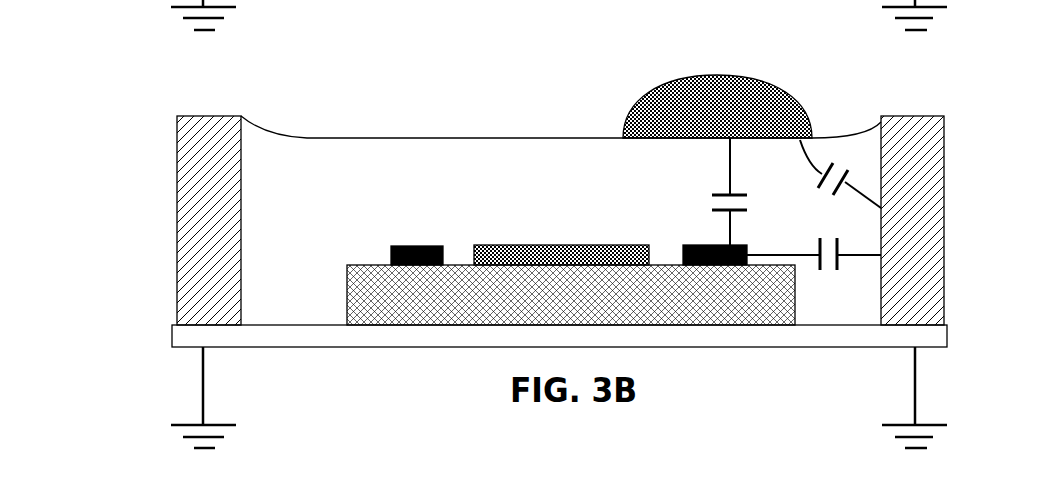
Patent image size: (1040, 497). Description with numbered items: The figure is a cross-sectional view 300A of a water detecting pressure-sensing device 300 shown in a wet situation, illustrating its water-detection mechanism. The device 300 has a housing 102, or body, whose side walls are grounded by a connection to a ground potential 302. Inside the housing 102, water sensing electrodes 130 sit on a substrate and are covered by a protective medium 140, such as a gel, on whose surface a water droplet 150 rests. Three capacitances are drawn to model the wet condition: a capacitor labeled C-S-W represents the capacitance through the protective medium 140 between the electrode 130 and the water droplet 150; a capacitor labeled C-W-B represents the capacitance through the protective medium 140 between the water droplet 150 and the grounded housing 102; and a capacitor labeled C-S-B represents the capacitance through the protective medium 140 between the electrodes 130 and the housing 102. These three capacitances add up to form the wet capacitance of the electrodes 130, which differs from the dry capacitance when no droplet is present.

The cross-sectional view 300A is at (134, 64).
The water droplet 150 is at (739, 76).
The water detecting pressure-sensing device 300 is at (953, 97).
The housing 102 is at (944, 214).
The protective medium 140 is at (313, 175).
The electrodes 130 is at (697, 241).
The ground potential 302 is at (927, 397).